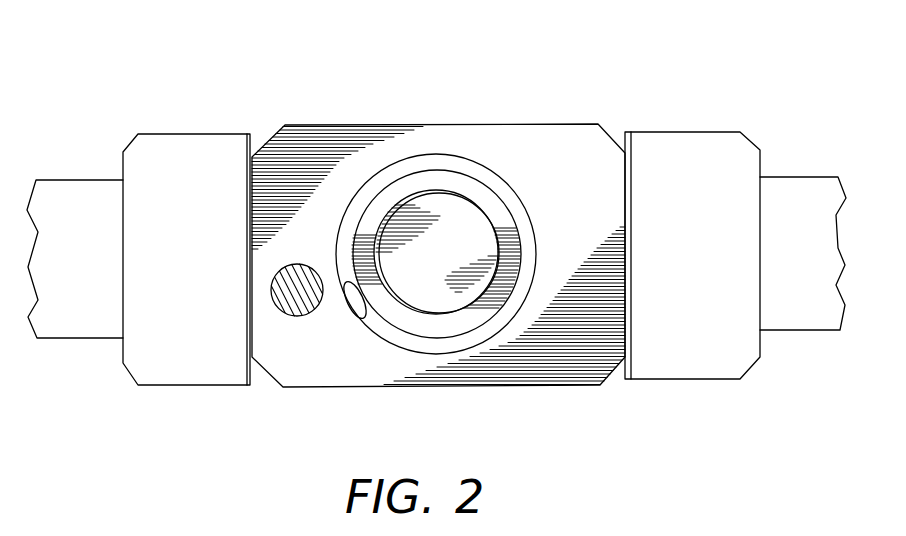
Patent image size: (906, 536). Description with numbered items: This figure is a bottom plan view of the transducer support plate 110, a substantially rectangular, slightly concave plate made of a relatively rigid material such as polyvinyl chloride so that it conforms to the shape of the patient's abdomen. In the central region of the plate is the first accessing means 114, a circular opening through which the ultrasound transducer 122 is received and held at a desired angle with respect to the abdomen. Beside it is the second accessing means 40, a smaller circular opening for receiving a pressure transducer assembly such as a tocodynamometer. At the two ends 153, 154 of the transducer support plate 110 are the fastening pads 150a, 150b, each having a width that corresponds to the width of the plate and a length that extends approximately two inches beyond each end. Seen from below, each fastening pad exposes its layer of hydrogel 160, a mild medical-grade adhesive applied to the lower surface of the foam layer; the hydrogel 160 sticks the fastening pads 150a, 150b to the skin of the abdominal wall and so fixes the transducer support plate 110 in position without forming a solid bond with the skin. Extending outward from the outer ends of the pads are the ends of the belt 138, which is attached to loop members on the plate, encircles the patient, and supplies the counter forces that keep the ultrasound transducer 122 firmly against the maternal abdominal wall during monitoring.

The transducer support plate 110 is at (495, 110).
The ultrasound transducer 122 is at (448, 261).
The first accessing means 114 is at (362, 317).
The second accessing means 40 is at (297, 316).
The fastening pad 150a is at (192, 386).
The fastening pad 150b is at (695, 382).
The end of transducer support plate 153 is at (247, 172).
The end of transducer support plate 154 is at (632, 175).
The hydrogel 160 is at (203, 251).
The belt 138 is at (80, 180).